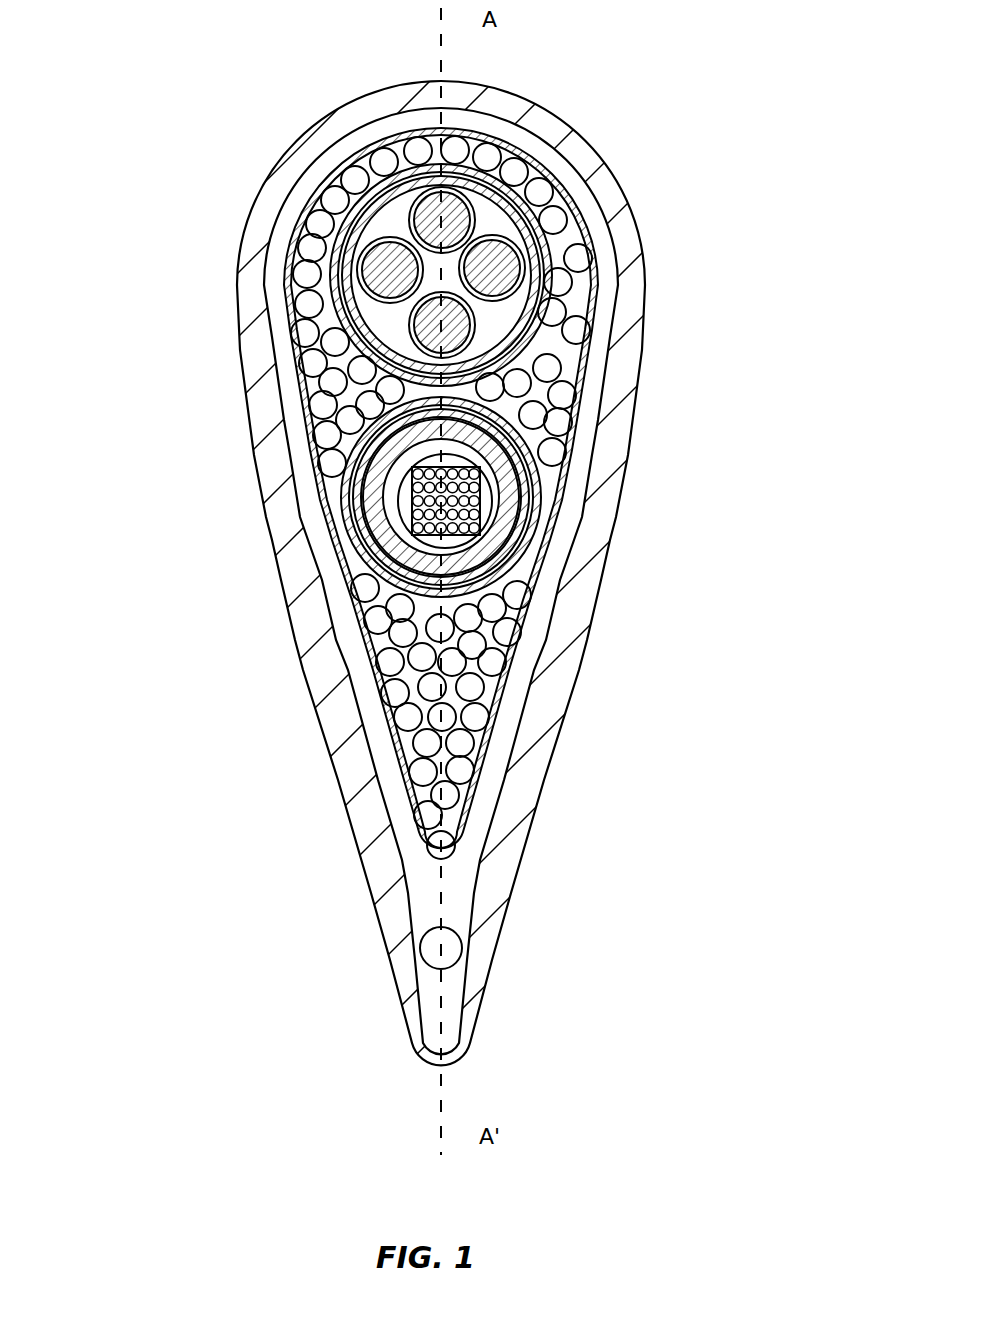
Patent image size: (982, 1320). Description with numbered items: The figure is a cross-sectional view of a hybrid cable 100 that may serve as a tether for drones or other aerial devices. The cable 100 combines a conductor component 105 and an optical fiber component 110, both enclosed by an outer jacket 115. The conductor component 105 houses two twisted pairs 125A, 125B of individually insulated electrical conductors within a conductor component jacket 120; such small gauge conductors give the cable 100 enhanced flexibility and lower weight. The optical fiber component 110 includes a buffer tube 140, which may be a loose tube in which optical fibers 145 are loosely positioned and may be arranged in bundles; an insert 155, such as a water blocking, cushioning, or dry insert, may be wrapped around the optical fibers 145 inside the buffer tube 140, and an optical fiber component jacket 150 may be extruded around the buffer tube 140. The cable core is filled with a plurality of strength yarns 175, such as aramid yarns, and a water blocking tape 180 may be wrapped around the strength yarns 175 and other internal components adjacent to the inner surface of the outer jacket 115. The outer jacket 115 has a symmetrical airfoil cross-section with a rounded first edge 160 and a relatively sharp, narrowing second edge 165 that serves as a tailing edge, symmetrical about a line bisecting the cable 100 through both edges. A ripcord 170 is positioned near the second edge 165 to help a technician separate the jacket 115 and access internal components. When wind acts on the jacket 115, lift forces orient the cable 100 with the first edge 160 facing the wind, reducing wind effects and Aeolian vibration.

The hybrid cable 100 is at (246, 78).
The conductor component 105 is at (572, 248).
The optical fiber component 110 is at (500, 527).
The outer jacket 115 is at (273, 455).
The conductor component jacket 120 is at (530, 346).
The twisted pair 125A is at (492, 325).
The twisted pair 125B is at (272, 340).
The buffer tube 140 is at (533, 557).
The optical fibers 145 is at (548, 468).
The optical fiber component jacket 150 is at (537, 577).
The insert 155 is at (497, 497).
The first edge 160 is at (593, 133).
The second edge 165 is at (508, 995).
The ripcord 170 is at (454, 890).
The strength yarns 175 is at (385, 639).
The water blocking tape 180 is at (390, 768).